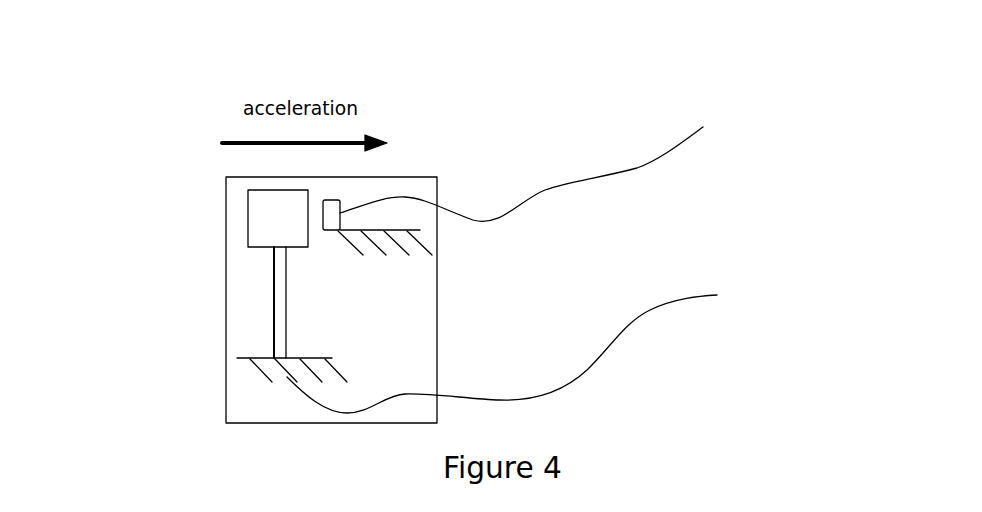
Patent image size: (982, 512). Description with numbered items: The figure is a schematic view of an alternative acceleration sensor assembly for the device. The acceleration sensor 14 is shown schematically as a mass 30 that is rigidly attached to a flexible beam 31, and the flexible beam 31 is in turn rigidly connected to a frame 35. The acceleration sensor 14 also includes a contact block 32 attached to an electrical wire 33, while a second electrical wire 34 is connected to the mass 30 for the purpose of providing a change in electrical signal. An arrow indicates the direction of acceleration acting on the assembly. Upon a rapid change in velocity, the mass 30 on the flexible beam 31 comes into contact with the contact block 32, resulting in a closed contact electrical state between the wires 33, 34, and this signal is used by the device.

The acceleration sensor 14 is at (796, 263).
The mass 30 is at (240, 215).
The flexible beam 31 is at (274, 302).
The contact block 32 is at (346, 205).
The electrical wire 33 is at (543, 200).
The electrical wire 34 is at (616, 359).
The frame 35 is at (274, 378).